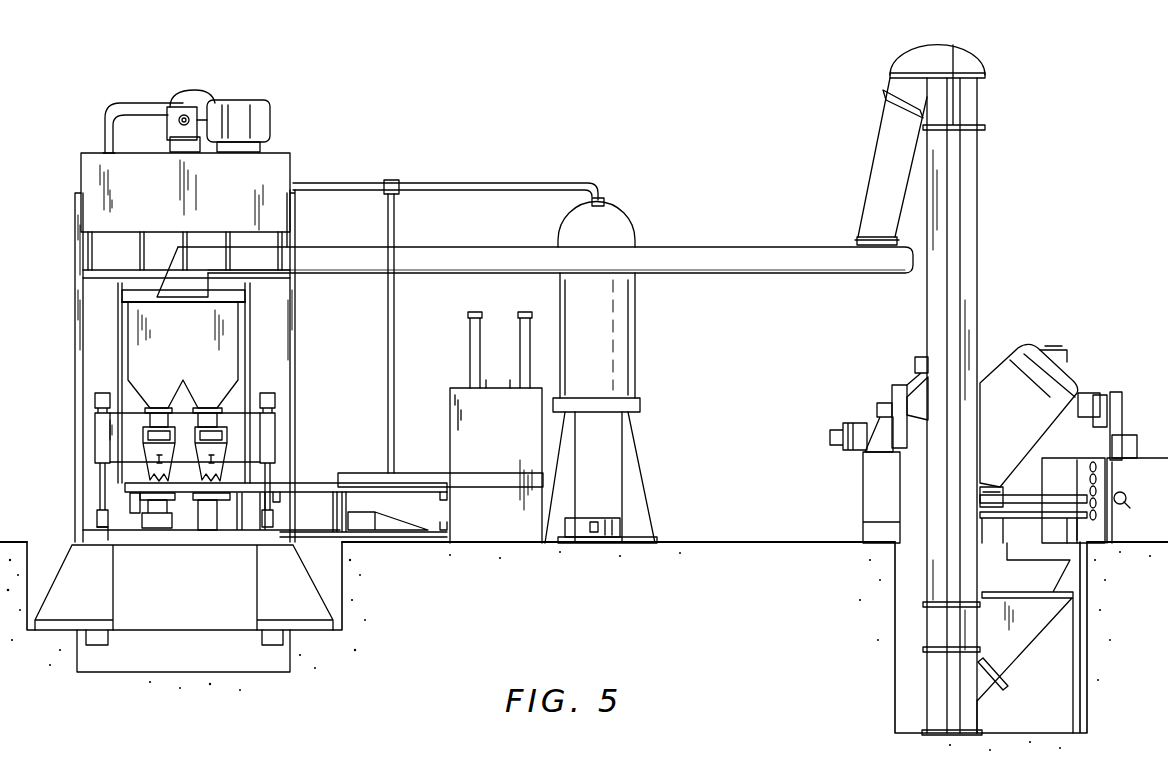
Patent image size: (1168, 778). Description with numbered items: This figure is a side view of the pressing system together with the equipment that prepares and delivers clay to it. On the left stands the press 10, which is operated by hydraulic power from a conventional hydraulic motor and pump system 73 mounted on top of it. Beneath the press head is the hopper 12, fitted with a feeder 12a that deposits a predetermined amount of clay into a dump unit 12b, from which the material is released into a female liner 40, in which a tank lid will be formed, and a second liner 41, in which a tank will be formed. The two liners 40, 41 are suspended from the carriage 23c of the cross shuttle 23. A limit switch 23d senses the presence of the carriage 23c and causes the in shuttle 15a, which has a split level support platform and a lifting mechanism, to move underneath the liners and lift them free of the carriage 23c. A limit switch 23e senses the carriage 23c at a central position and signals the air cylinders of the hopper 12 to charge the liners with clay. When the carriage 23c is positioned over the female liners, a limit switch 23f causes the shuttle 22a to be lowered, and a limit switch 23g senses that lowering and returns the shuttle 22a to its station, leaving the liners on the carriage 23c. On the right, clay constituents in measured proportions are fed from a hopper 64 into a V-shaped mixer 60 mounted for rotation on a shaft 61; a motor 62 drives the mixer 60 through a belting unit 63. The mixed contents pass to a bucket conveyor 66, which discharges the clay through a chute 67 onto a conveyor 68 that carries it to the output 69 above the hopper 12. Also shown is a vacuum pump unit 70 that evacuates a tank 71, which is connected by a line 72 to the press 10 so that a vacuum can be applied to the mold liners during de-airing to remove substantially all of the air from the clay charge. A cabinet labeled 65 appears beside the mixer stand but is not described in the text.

The press 10 is at (123, 262).
The hopper 12 is at (189, 357).
The feeder 12a is at (205, 418).
The dump unit 12b is at (150, 458).
The in shuttle 15a is at (143, 522).
The shuttle 22a is at (370, 515).
The cross shuttle 23 is at (322, 516).
The carriage 23c is at (183, 500).
The limit switch 23d is at (128, 496).
The limit switch 23e is at (278, 490).
The limit switch 23f is at (448, 497).
The limit switch 23g is at (448, 528).
The female liner 40 is at (160, 505).
The second liner 41 is at (207, 527).
The V-shaped mixer 60 is at (1012, 430).
The shaft 61 is at (878, 408).
The motor 62 is at (845, 440).
The belting unit 63 is at (895, 448).
The hopper 64 is at (1008, 636).
The control cabinet 65 is at (1148, 486).
The bucket conveyor 66 is at (963, 216).
The chute 67 is at (880, 170).
The conveyor 68 is at (680, 258).
The output 69 is at (196, 285).
The vacuum pump unit 70 is at (580, 518).
The tank 71 is at (610, 378).
The line 72 is at (483, 186).
The hydraulic motor and pump system 73 is at (227, 83).